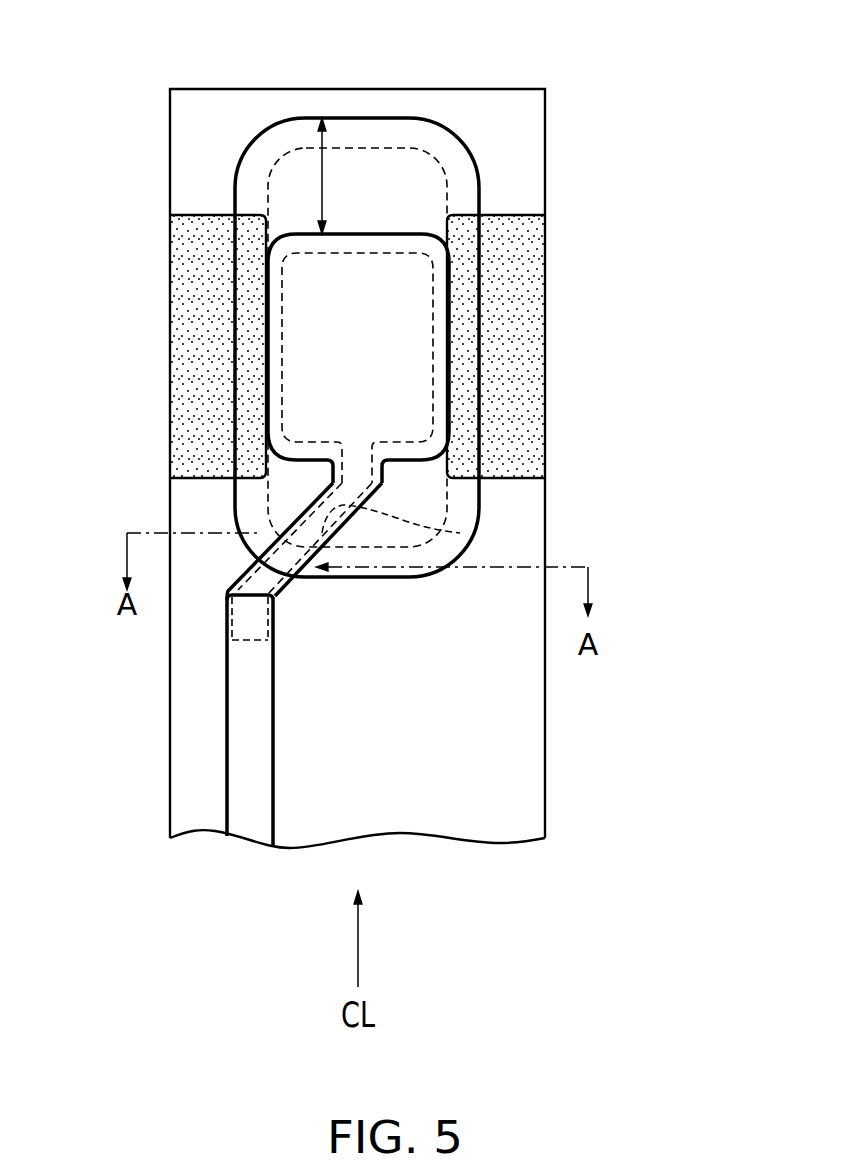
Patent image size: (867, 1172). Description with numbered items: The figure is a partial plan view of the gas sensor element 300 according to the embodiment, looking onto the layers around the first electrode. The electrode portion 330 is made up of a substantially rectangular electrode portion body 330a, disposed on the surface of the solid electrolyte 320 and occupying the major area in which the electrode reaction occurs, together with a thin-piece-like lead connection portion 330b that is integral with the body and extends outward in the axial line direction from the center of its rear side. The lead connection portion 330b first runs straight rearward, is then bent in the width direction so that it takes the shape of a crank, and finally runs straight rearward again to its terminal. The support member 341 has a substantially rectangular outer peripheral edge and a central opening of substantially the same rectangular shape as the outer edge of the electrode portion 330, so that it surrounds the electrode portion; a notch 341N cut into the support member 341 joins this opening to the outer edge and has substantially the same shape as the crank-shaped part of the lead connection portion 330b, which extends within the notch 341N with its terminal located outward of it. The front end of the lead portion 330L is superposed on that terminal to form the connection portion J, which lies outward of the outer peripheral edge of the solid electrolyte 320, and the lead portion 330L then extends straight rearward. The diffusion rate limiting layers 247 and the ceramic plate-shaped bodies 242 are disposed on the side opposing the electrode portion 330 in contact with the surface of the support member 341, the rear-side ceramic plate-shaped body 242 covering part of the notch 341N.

The gas sensor element 300 is at (505, 100).
The solid electrolyte 320 is at (441, 163).
The electrode portion 330 is at (403, 229).
The electrode portion body 330a is at (357, 368).
The lead connection portion 330b is at (243, 569).
The lead portion 330L is at (267, 790).
The support member 341 is at (320, 180).
The notch 341N is at (460, 533).
The diffusion rate limiting layer 247 is at (198, 342).
The ceramic plate-shaped body 242 is at (213, 607).
The connection portion J is at (273, 619).